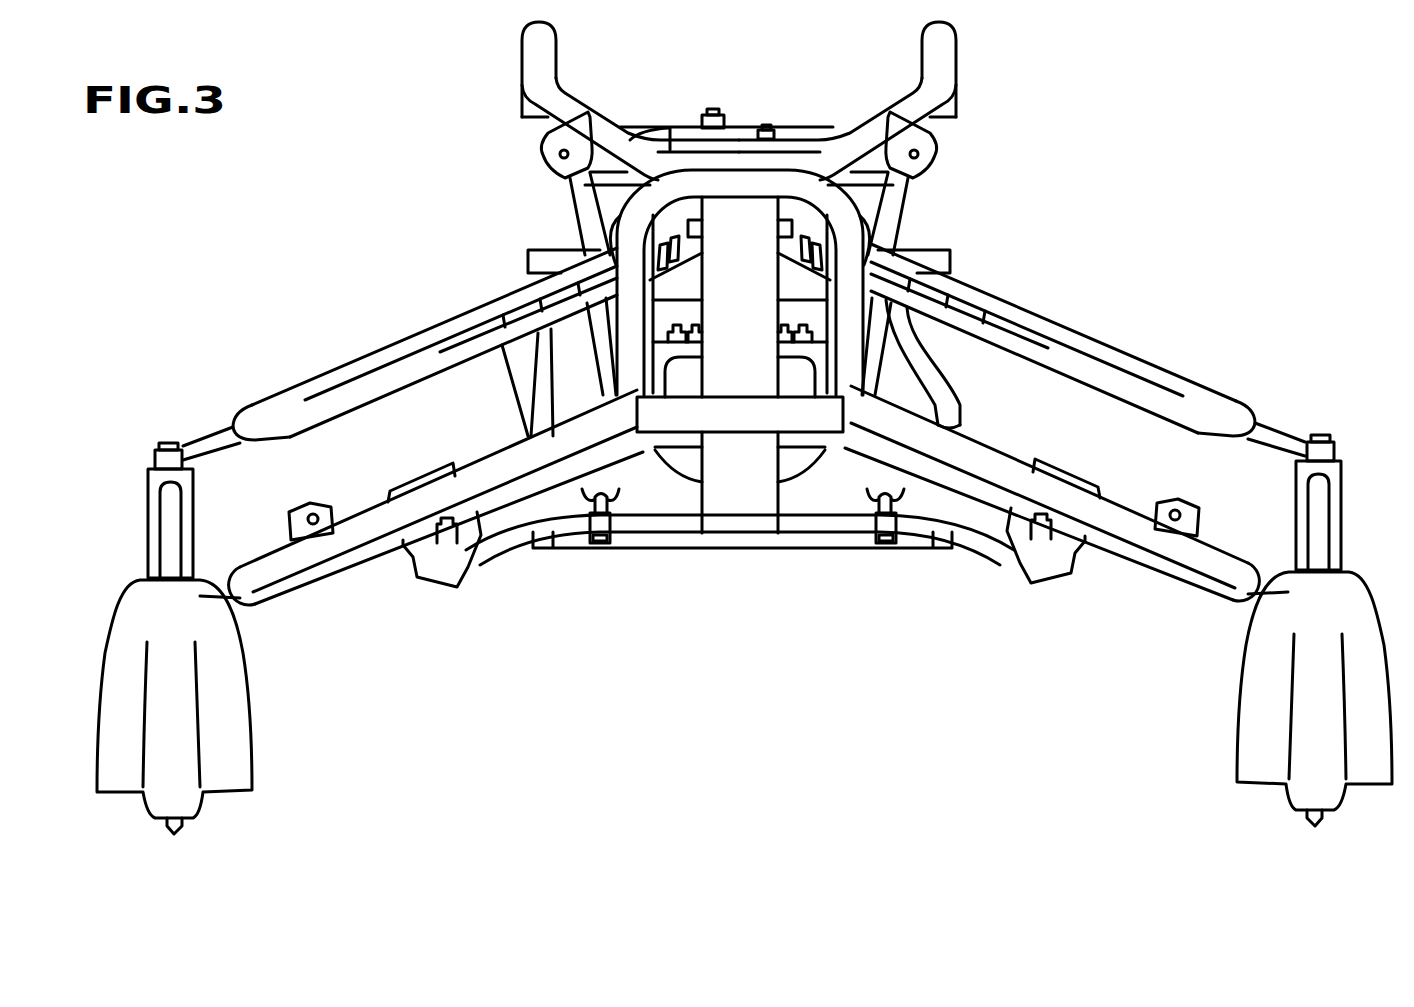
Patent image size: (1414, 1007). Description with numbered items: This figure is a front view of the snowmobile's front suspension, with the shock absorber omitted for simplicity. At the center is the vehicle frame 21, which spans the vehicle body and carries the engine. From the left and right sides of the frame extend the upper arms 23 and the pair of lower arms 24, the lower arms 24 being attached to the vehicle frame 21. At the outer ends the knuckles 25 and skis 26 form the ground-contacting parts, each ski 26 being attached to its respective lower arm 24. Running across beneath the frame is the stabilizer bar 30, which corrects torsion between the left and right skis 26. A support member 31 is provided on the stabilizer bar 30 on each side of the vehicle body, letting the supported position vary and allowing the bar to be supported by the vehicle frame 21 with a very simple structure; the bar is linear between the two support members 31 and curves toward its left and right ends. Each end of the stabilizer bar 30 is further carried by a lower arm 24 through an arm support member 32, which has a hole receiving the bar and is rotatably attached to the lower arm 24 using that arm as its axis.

The vehicle frame 21 is at (763, 222).
The upper arm 23 is at (345, 365).
The lower arm 24 is at (318, 584).
The knuckle 25 is at (145, 482).
The ski 26 is at (223, 795).
The stabilizer bar 30 is at (503, 545).
The support member 31 is at (605, 563).
The arm support member 32 is at (427, 588).